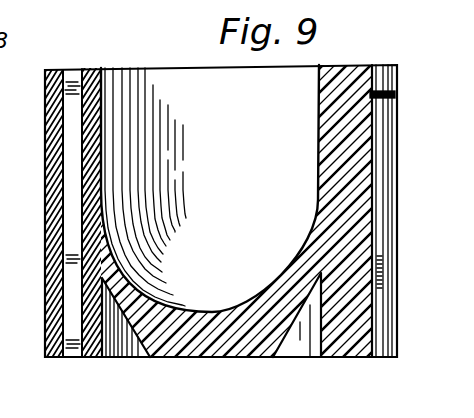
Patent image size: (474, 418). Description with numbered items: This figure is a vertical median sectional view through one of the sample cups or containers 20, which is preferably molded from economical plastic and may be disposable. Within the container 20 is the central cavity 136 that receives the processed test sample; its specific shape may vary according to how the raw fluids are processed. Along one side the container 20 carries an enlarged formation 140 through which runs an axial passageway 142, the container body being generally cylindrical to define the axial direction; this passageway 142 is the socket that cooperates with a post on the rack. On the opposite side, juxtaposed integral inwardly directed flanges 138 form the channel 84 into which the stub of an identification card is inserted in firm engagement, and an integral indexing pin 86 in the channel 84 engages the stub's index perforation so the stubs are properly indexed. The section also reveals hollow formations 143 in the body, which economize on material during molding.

The container 20 is at (89, 361).
The channel 84 is at (380, 144).
The indexing pin 86 is at (394, 94).
The central cavity 136 is at (215, 143).
The inwardly directed flanges 138 is at (393, 247).
The enlarged formation 140 is at (45, 142).
The axial passageway 142 is at (69, 86).
The hollow formations 143 is at (302, 333).